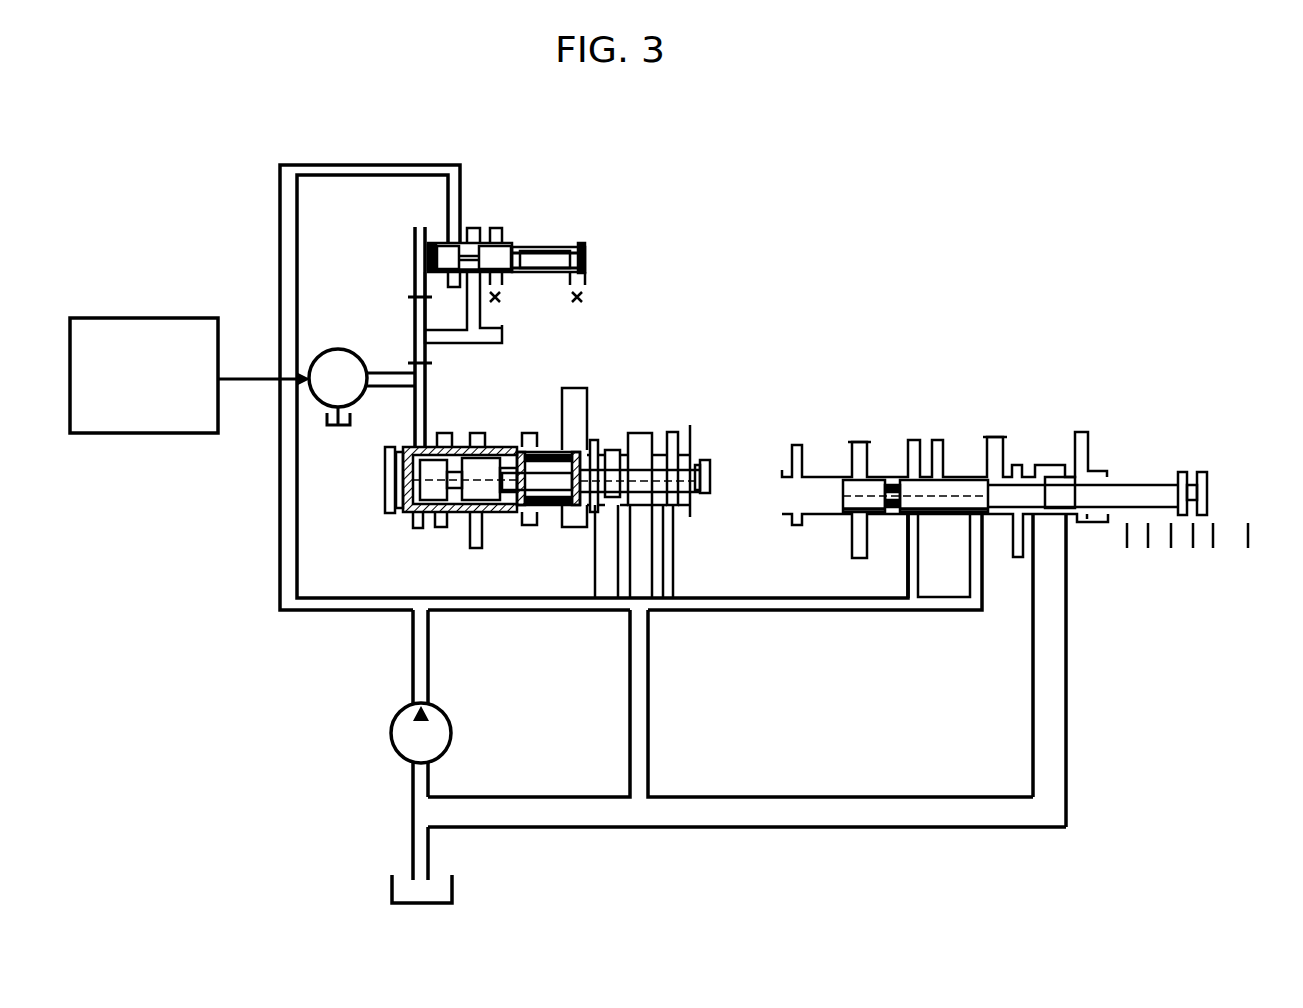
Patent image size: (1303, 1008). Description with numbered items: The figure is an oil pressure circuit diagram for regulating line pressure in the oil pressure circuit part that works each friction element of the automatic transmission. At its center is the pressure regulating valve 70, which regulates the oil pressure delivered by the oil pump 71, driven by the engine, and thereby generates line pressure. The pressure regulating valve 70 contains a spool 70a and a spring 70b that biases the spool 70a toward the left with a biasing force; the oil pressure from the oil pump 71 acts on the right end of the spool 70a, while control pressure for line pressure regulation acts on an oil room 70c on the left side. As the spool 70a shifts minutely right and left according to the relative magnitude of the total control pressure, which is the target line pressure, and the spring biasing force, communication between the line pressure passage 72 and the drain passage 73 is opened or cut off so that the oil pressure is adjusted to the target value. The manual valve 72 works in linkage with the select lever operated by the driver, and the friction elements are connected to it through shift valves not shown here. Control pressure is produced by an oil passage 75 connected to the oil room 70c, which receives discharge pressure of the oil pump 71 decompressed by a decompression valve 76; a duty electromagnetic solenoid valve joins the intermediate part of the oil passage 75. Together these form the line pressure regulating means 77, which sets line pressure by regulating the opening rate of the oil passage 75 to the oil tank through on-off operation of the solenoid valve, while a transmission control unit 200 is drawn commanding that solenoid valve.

The line pressure regulating means 77 is at (258, 236).
The decompression valve 76 is at (512, 228).
The oil passage 75 is at (415, 312).
The pressure regulating valve 70 is at (506, 435).
The spool 70a is at (603, 472).
The spring 70b is at (525, 517).
The oil room 70c is at (390, 475).
The manual valve 72 is at (670, 545).
The oil pump 71 is at (452, 727).
The drain passage 73 is at (637, 720).
The transmission control unit 200 is at (148, 437).